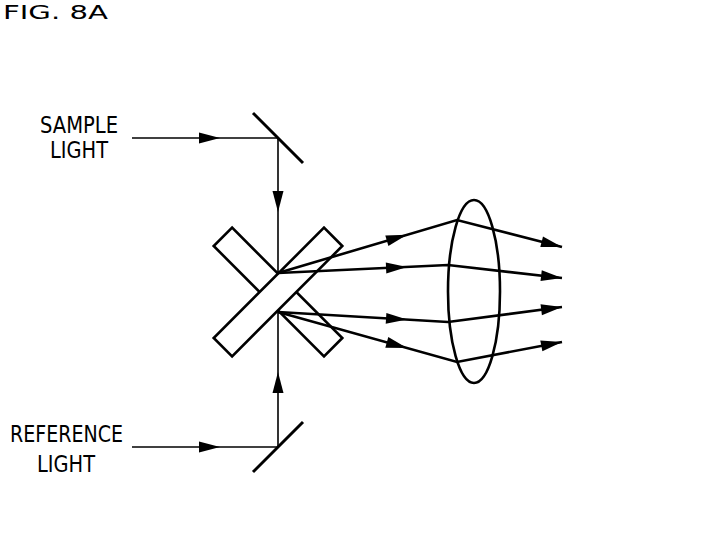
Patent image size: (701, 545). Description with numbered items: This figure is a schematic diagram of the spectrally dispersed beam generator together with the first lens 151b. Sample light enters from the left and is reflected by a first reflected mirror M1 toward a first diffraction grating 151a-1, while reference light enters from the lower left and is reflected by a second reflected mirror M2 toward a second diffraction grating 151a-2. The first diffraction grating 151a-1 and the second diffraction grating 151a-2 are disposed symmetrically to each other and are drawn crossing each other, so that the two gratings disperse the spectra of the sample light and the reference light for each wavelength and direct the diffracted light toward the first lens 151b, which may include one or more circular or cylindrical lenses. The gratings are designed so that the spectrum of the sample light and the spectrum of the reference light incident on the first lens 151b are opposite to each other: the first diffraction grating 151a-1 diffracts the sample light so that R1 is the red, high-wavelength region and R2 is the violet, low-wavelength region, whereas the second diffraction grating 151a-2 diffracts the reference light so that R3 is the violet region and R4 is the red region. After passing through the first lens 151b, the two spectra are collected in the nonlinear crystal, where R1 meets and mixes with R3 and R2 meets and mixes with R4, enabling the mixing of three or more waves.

The first reflected mirror M1 is at (270, 130).
The second reflected mirror M2 is at (270, 458).
The first diffraction grating 151a-1 is at (333, 237).
The second diffraction grating 151a-2 is at (335, 348).
The first lens 151b is at (493, 228).
The red region of the sample light spectrum R1 is at (457, 218).
The violet region of the sample light spectrum R2 is at (448, 262).
The violet region of the reference light spectrum R3 is at (448, 322).
The red region of the reference light spectrum R4 is at (457, 362).